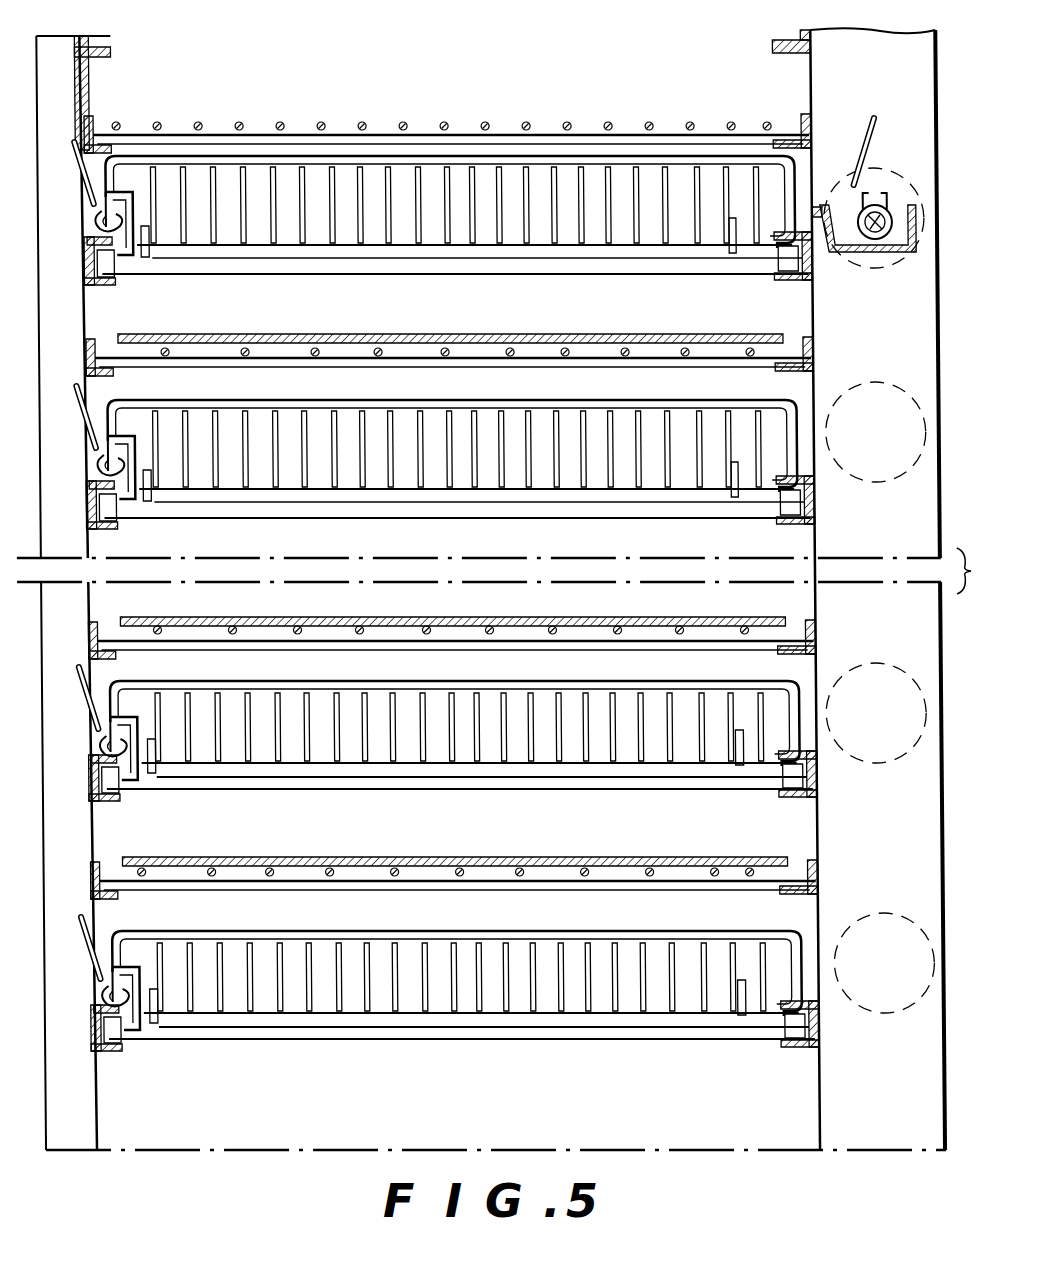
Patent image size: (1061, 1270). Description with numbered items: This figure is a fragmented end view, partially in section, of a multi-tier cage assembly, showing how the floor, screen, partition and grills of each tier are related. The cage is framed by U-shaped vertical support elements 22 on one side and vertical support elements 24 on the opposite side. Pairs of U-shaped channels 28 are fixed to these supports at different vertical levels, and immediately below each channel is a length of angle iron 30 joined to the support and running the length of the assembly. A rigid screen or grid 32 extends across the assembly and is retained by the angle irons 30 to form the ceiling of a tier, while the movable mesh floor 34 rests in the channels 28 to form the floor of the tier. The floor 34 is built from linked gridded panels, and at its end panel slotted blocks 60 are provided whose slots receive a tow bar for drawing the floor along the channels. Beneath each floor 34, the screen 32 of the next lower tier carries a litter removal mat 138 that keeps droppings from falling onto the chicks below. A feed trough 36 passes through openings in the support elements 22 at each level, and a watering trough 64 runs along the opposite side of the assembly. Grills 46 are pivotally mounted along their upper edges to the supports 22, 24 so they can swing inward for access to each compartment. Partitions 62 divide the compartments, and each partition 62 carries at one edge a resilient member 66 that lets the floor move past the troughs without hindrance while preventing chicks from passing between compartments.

The vertical support element 22 is at (900, 816).
The vertical support element 24 is at (80, 838).
The U-shaped channel 28 is at (108, 50).
The angle iron 30 is at (95, 120).
The rigid screen or grid 32 is at (438, 128).
The movable mesh floor 34 is at (475, 276).
The feed trough 36 is at (860, 255).
The grill 46 is at (68, 158).
The slotted block 60 is at (150, 240).
The partition 62 is at (612, 243).
The watering trough 64 is at (92, 222).
The resilient member 66 is at (130, 197).
The litter removal mat 138 is at (320, 340).